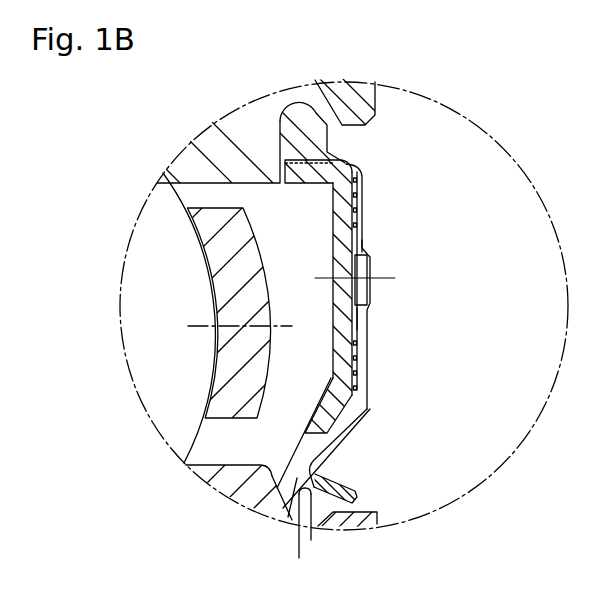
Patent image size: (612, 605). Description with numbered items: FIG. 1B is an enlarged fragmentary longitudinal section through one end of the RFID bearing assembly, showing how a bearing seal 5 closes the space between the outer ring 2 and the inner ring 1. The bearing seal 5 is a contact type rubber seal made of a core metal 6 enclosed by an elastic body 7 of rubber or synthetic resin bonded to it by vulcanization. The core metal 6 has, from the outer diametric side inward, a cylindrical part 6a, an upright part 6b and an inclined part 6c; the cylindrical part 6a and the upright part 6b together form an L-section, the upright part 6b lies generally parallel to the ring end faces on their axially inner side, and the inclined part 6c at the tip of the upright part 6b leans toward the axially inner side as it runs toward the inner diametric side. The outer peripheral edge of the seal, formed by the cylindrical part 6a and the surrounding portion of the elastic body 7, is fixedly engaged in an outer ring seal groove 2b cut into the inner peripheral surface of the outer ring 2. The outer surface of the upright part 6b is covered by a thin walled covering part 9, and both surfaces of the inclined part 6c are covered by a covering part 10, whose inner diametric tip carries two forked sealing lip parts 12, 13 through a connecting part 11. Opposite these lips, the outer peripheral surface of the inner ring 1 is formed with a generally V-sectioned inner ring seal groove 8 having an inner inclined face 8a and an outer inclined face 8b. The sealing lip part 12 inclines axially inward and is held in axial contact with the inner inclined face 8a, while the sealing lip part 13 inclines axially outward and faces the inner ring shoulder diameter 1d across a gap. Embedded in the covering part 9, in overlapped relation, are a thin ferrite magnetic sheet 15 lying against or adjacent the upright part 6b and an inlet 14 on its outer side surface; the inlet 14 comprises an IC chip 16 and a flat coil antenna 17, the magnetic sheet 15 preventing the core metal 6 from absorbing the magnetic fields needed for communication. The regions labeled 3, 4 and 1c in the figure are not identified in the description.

The inner ring 1 is at (237, 480).
The holder flange portion 1c is at (240, 463).
The inner ring shoulder diameter 1d is at (361, 512).
The outer ring 2 is at (222, 140).
The outer ring seal groove 2b is at (298, 103).
The lens unit 3 is at (166, 293).
The lens 4 is at (246, 268).
The bearing seal 5 is at (433, 160).
The core metal 6 is at (306, 302).
The cylindrical part 6a is at (312, 175).
The upright part 6b is at (342, 266).
The inclined part 6c is at (320, 410).
The elastic body 7 is at (364, 183).
The inner ring seal groove 8 is at (349, 541).
The inner inclined face 8a is at (299, 558).
The outer inclined face 8b is at (311, 540).
The covering part 9 is at (363, 315).
The covering part 10 is at (303, 426).
The connecting part 11 is at (306, 456).
The sealing lip part 12 is at (291, 492).
The sealing lip part 13 is at (358, 493).
The inlet 14 is at (459, 233).
The magnetic sheet 15 is at (358, 170).
The IC chip 16 is at (371, 293).
The antenna 17 is at (364, 246).